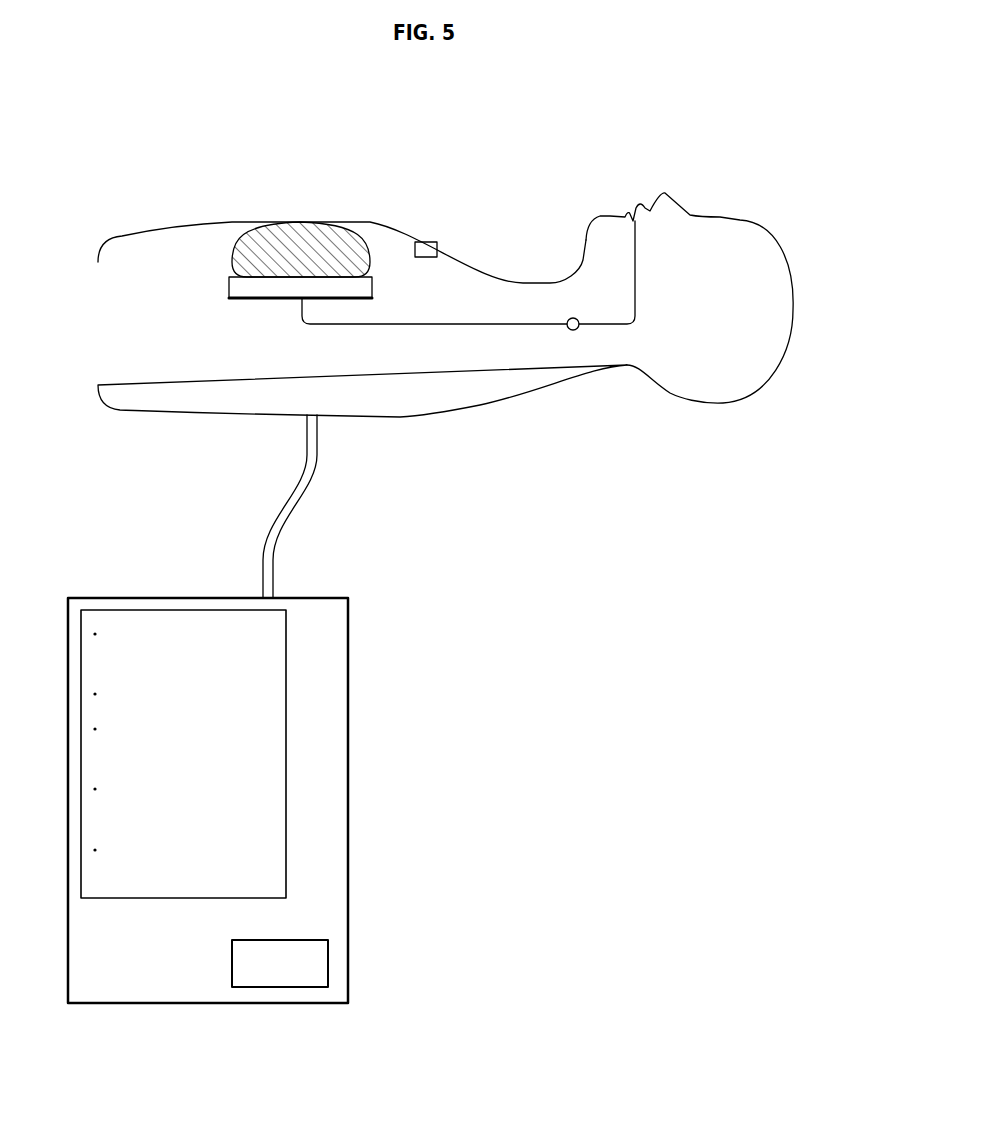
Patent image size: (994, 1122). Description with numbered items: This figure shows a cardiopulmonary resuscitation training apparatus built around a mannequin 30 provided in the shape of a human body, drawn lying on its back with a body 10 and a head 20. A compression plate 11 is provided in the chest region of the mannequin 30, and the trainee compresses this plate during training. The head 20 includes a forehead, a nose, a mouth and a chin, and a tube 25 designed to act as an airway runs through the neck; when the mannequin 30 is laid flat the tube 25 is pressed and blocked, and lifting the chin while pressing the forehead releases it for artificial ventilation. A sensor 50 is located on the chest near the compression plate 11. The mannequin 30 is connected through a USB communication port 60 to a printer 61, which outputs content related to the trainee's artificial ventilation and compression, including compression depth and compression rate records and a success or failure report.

The manikin body (torso) 10 is at (168, 224).
The compression plate 11 is at (300, 230).
The head 20 is at (730, 214).
The tube 25 is at (573, 330).
The mannequin 30 is at (443, 101).
The sensor 50 is at (429, 242).
The USB communication port 60 is at (307, 497).
The printer 61 is at (348, 800).